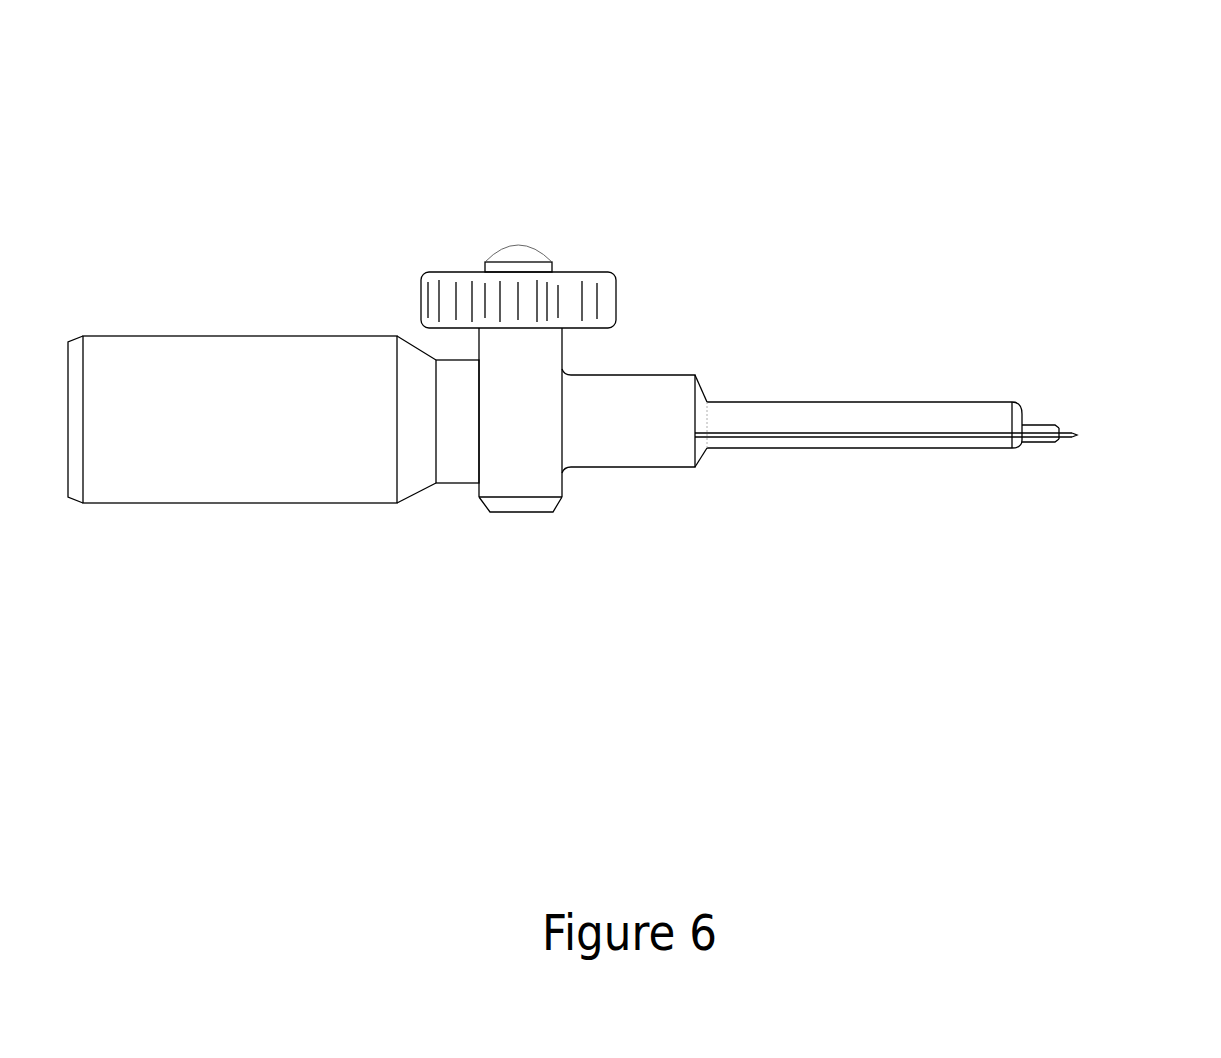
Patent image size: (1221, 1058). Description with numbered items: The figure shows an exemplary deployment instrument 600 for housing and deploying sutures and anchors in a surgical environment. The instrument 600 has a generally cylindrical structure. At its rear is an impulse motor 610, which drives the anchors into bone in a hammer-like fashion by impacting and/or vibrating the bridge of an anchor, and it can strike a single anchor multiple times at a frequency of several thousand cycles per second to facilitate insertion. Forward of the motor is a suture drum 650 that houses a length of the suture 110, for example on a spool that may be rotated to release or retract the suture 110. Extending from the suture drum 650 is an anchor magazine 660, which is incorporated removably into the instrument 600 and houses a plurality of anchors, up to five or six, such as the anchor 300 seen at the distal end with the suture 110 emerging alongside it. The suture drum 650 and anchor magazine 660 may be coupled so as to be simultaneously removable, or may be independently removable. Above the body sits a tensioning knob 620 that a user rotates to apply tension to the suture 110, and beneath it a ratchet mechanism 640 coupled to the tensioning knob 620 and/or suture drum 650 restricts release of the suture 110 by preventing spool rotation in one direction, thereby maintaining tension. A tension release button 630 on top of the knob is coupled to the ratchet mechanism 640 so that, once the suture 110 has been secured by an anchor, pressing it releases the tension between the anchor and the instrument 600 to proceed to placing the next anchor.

The deployment instrument 600 is at (377, 237).
The impulse motor 610 is at (275, 502).
The tensioning knob 620 is at (615, 300).
The tension release button 630 is at (533, 247).
The ratchet mechanism 640 is at (512, 512).
The suture drum 650 is at (630, 467).
The anchor magazine 660 is at (850, 400).
The anchor 300 is at (1033, 427).
The suture 110 is at (1063, 437).